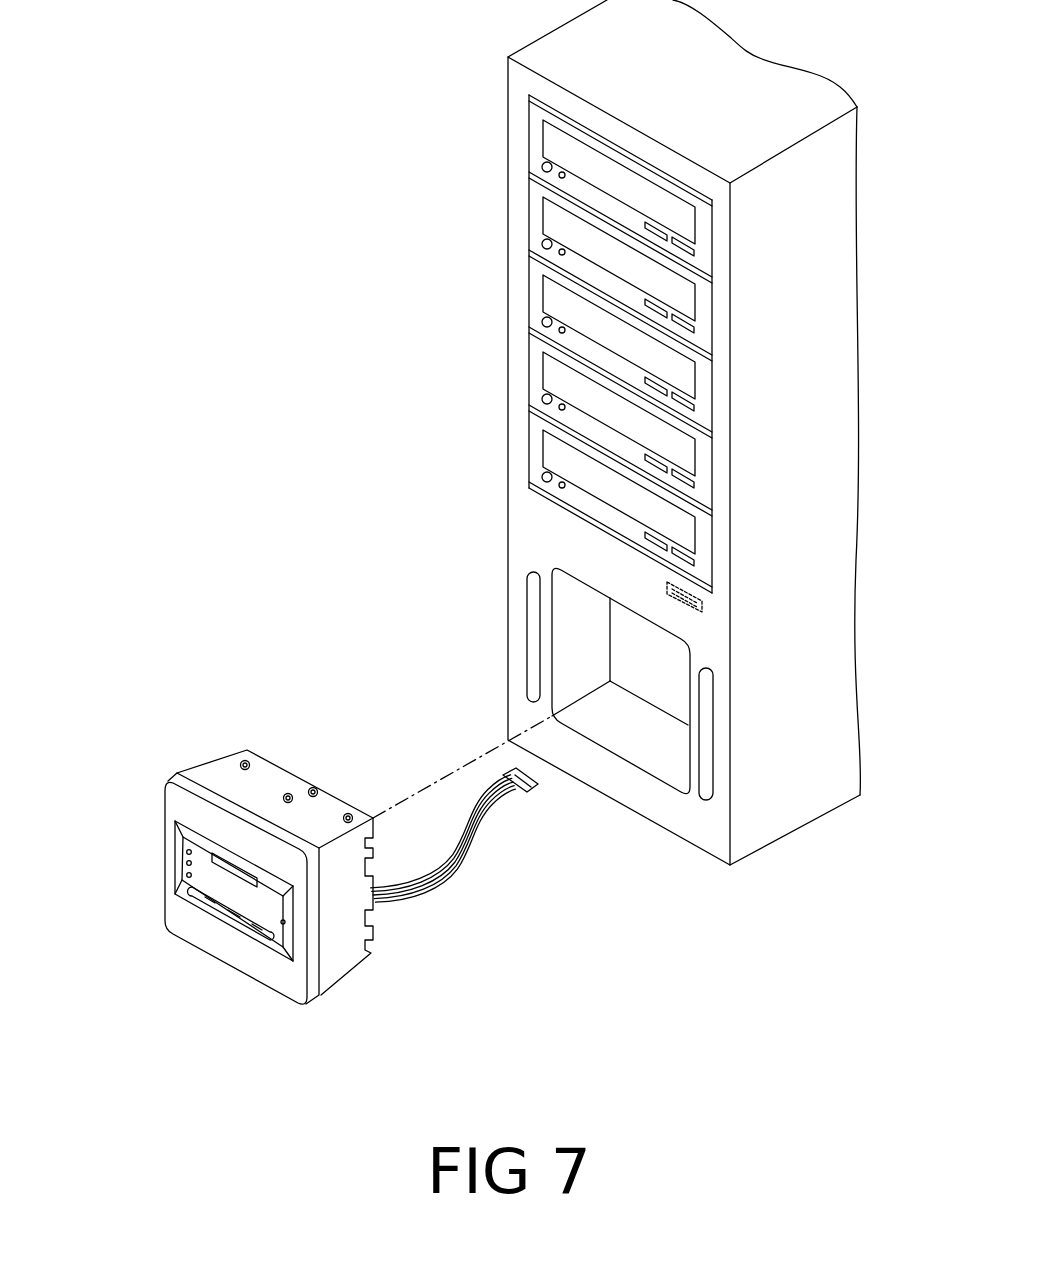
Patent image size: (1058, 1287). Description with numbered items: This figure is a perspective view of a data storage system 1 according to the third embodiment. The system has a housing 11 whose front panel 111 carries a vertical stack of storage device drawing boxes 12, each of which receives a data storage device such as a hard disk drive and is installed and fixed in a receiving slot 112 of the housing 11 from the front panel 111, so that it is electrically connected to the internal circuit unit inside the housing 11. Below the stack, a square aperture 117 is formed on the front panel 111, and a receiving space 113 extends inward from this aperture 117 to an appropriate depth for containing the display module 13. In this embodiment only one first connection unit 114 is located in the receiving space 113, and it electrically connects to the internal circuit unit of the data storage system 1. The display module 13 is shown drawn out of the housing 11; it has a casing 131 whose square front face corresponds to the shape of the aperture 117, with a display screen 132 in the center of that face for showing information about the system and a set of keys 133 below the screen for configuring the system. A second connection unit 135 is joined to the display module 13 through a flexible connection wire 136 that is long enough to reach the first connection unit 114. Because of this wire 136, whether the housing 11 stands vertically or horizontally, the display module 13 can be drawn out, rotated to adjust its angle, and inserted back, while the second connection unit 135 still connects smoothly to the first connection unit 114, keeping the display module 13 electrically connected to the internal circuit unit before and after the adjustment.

The data storage system 1 is at (412, 118).
The housing 11 is at (494, 331).
The storage device drawing boxes 12 is at (557, 220).
The receiving slot 112 is at (542, 390).
The first connection unit 114 is at (667, 583).
The square aperture 117 is at (572, 623).
The front panel 111 is at (515, 690).
The receiving space 113 is at (657, 747).
The display module 13 is at (161, 793).
The casing 131 is at (347, 957).
The display screen 132 is at (210, 870).
The set of keys 133 is at (197, 897).
The second connection unit 135 is at (531, 793).
The flexible connection wire 136 is at (467, 868).